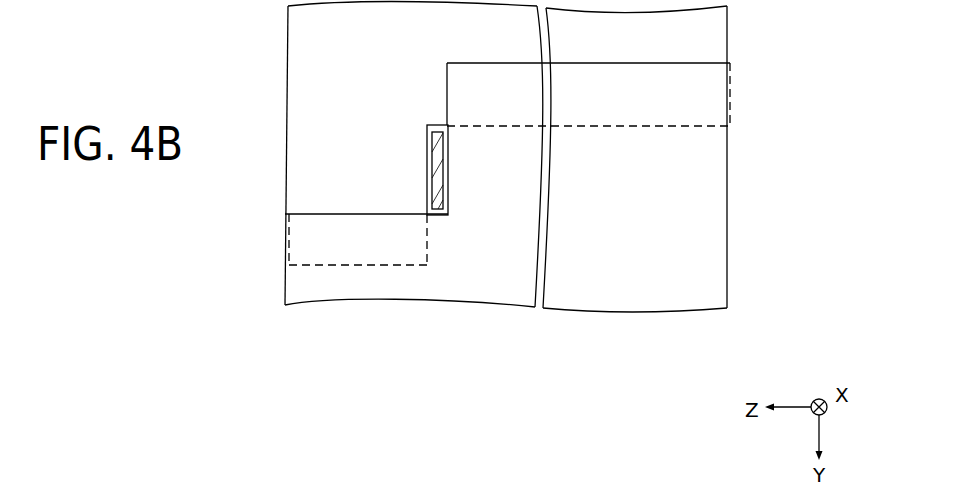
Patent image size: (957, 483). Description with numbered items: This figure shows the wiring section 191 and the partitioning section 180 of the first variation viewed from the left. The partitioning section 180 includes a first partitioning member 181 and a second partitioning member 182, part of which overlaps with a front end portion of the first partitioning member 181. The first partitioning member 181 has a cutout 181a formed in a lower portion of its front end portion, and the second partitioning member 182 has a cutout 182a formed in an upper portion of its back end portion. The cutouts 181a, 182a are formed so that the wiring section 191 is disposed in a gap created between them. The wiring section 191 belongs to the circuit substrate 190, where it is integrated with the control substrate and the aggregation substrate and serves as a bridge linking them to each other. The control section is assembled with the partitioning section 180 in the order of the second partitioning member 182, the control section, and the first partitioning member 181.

The partitioning section 180 is at (807, 25).
The first partitioning member 181 is at (715, 41).
The cutout 181a is at (428, 248).
The second partitioning member 182 is at (715, 142).
The cutout 182a is at (327, 214).
The circuit substrate 190 is at (475, 170).
The wiring section 191 is at (447, 162).